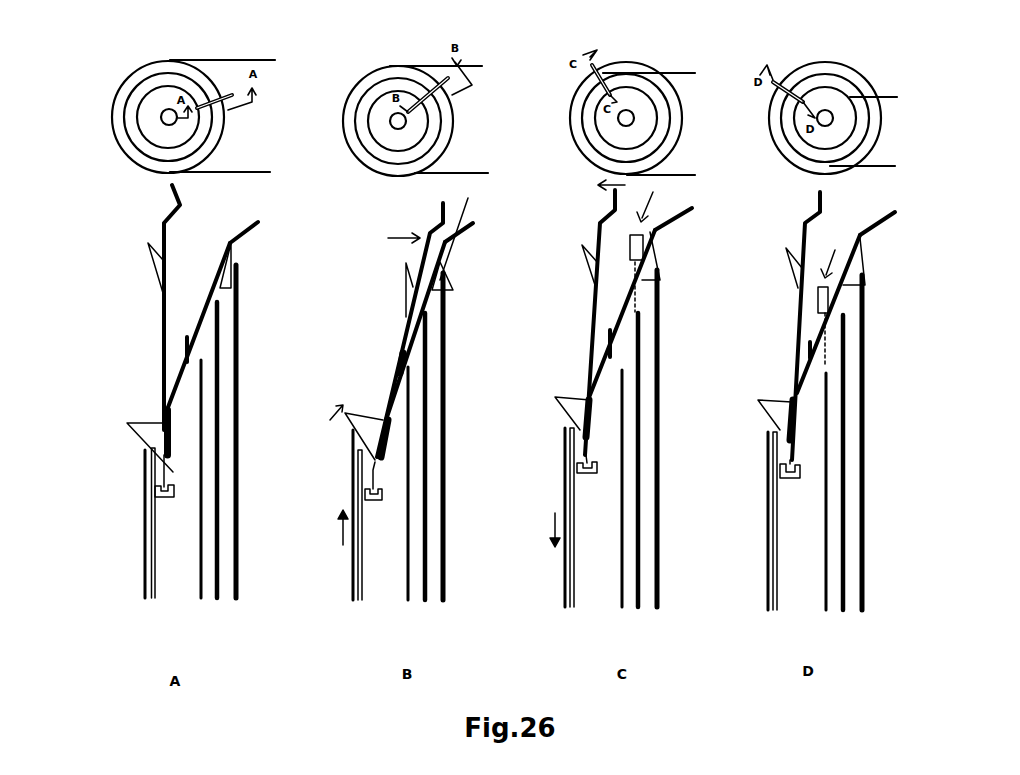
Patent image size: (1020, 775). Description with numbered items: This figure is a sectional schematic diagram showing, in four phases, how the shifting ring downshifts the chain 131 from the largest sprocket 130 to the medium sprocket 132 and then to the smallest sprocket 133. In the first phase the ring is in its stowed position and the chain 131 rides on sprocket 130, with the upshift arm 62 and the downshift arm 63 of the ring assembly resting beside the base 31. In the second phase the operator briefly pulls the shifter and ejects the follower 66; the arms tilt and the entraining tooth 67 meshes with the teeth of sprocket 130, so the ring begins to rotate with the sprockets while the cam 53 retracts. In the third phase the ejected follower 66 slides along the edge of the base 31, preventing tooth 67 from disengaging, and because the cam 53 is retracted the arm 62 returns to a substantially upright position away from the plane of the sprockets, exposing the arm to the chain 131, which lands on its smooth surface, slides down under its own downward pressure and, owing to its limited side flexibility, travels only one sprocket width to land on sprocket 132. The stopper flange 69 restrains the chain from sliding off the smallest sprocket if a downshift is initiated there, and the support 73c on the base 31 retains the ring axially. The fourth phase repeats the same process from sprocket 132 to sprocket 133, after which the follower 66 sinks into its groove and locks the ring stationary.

The upshift arm 62 is at (164, 325).
The downshift arm 63 is at (207, 307).
The entraining tooth 67 is at (227, 270).
The stopper flange 69 is at (188, 340).
The follower 66 is at (140, 427).
The cam 53 is at (132, 467).
The base 31 is at (153, 562).
The support 73c is at (163, 500).
The sprocket 130 is at (236, 598).
The chain 131 is at (640, 240).
The sprocket 132 is at (217, 598).
The sprocket 133 is at (201, 598).